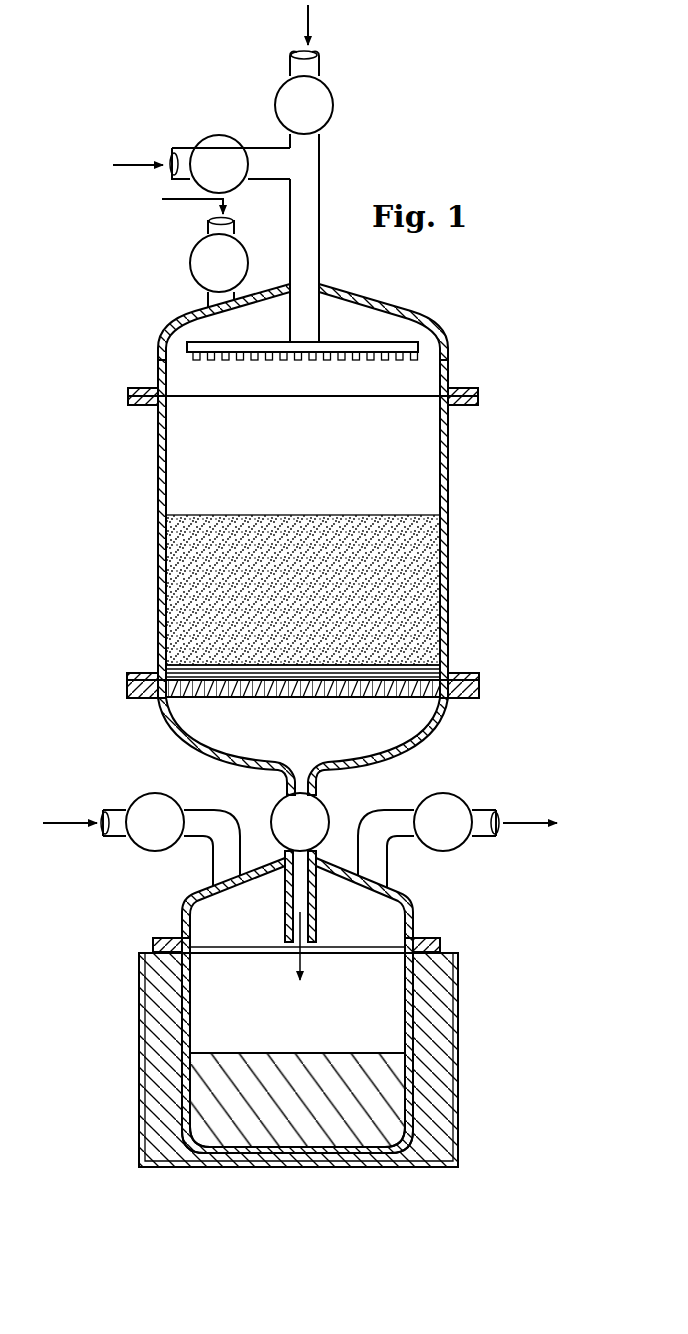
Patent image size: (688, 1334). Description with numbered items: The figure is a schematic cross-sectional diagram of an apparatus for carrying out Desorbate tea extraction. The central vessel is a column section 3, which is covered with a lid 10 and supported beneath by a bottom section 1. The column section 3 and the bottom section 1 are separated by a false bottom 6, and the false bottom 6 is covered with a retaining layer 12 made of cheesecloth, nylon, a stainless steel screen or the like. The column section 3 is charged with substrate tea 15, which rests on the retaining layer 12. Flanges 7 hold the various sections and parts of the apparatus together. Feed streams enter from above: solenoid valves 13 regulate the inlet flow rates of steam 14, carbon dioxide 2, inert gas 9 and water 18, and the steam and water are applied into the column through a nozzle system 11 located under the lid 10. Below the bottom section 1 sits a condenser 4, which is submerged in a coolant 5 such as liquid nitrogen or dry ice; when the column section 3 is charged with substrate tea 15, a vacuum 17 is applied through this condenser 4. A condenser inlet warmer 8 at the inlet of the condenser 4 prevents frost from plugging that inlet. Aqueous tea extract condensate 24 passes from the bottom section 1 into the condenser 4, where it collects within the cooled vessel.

The bottom section 1 is at (400, 742).
The carbon dioxide 2 is at (185, 200).
The column section 3 is at (448, 473).
The condenser 4 is at (416, 905).
The coolant 5 is at (430, 1012).
The false bottom 6 is at (460, 688).
The flanges 7 is at (470, 392).
The condenser inlet warmer 8 is at (318, 860).
The inert gas 9 is at (63, 822).
The lid 10 is at (375, 300).
The nozzle system 11 is at (420, 357).
The retaining layer 12 is at (405, 670).
The solenoid valves 13 is at (332, 118).
The steam 14 is at (135, 163).
The substrate tea 15 is at (405, 552).
The vacuum 17 is at (527, 822).
The water 18 is at (311, 27).
The aqueous tea extract condensate 24 is at (383, 1105).